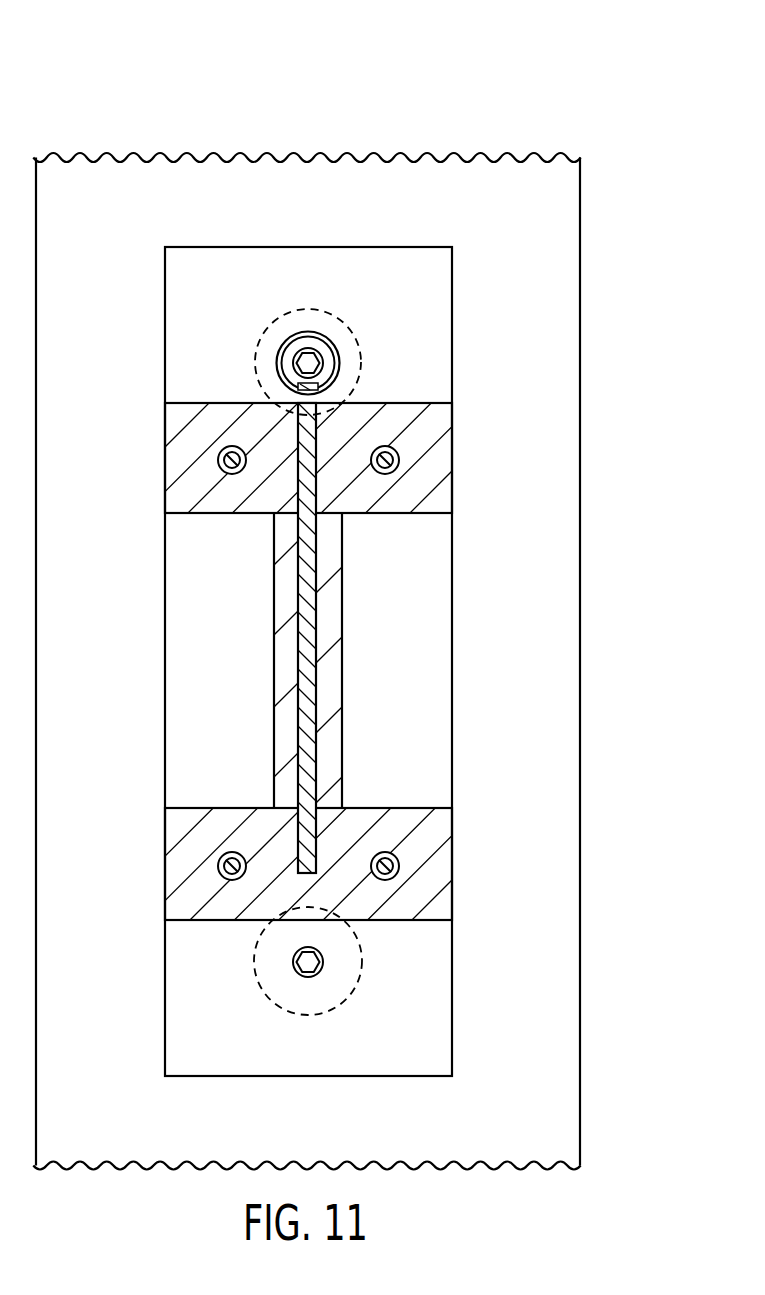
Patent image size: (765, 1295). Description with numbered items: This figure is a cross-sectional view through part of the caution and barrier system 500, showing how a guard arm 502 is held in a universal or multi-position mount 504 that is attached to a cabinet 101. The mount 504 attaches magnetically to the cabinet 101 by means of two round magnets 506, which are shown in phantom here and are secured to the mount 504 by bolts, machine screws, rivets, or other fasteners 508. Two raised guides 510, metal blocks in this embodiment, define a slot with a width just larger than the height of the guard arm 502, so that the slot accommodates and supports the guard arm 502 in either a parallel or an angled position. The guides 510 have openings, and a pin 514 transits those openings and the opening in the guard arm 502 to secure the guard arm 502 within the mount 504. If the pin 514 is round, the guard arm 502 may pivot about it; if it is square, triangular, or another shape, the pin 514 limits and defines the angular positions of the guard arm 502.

The caution and barrier system 500 is at (625, 87).
The cabinet 101 is at (571, 346).
The mount 504 is at (452, 555).
The raised guides 510 is at (180, 465).
The fasteners 508 is at (293, 369).
The magnets 506 is at (363, 358).
The guard arm 502 is at (333, 683).
The pin 514 is at (305, 649).